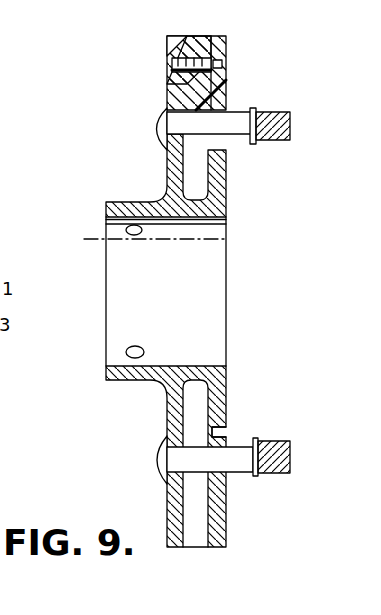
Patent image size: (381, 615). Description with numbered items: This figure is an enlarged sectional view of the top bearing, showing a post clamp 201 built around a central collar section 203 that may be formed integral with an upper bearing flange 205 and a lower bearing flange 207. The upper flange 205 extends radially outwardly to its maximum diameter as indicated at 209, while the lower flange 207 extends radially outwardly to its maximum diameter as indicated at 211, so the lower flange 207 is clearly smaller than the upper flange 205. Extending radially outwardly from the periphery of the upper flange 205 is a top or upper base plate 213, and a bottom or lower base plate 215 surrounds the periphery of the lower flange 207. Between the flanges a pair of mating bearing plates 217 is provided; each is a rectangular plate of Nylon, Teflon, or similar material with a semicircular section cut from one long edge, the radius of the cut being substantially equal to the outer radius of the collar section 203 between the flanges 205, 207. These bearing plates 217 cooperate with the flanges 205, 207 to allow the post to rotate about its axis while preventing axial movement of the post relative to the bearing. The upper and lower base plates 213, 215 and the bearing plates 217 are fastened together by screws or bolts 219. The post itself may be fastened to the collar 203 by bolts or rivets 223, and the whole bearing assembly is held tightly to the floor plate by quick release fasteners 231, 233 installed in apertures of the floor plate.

The post clamp 201 is at (131, 185).
The collar section 203 is at (147, 369).
The upper bearing flange 205 is at (173, 402).
The lower bearing flange 207 is at (219, 182).
The maximum diameter of upper flange 209 is at (162, 470).
The maximum diameter of lower flange 211 is at (226, 430).
The upper base plate 213 is at (176, 46).
The lower base plate 215 is at (228, 43).
The bearing plate 217 is at (198, 44).
The bolt 219 is at (226, 72).
The rivet 223 is at (108, 239).
The quick release fastener 231 is at (284, 125).
The quick release fastener 233 is at (285, 455).